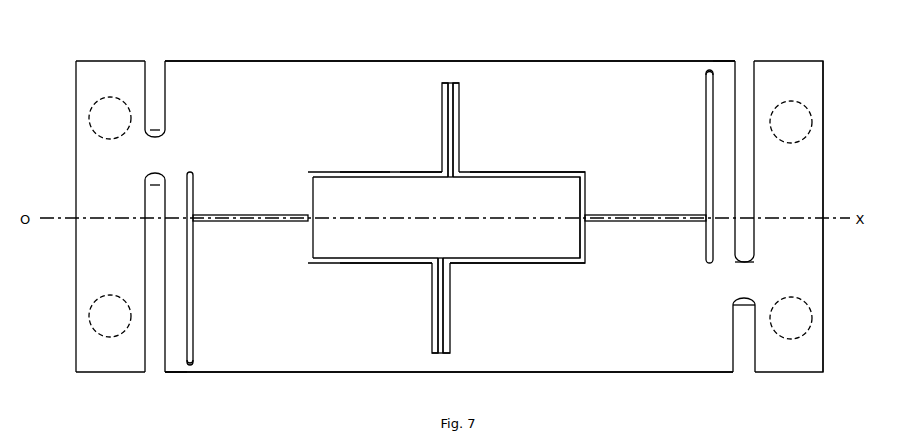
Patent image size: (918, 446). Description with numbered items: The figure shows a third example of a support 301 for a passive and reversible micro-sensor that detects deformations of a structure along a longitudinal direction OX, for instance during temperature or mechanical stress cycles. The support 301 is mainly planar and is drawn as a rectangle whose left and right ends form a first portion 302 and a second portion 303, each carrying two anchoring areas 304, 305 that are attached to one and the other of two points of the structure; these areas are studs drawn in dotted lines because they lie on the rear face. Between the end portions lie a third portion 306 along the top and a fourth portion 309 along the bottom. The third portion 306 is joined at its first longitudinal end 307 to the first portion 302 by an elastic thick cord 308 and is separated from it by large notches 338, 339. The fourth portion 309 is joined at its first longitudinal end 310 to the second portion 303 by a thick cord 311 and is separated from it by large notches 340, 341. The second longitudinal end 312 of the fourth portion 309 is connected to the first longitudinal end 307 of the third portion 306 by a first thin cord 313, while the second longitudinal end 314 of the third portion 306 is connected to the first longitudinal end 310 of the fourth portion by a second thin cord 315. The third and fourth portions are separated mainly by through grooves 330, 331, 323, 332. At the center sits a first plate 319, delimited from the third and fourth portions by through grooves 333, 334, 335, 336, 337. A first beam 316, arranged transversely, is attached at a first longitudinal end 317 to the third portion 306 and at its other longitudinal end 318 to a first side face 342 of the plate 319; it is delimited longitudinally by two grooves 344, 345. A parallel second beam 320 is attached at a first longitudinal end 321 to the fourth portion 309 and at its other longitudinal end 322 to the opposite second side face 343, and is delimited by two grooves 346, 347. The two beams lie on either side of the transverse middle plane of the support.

The support 301 is at (511, 55).
The first portion 302 is at (99, 172).
The second portion 303 is at (785, 163).
The anchoring areas 304 is at (90, 125).
The anchoring areas 305 is at (810, 111).
The third portion 306 is at (288, 95).
The first longitudinal end 307 is at (176, 121).
The thick cord 308 is at (179, 162).
The fourth portion 309 is at (570, 355).
The first longitudinal end 310 is at (733, 317).
The thick cord 311 is at (745, 275).
The second longitudinal end 312 is at (194, 362).
The first thin cord 313 is at (178, 372).
The second longitudinal end 314 is at (704, 87).
The second thin cord 315 is at (714, 63).
The first beam 316 is at (453, 158).
The first longitudinal end 317 is at (447, 83).
The other longitudinal end 318 is at (460, 175).
The first plate 319 is at (350, 177).
The second beam 320 is at (435, 291).
The first longitudinal end 321 is at (443, 356).
The other longitudinal end 322 is at (443, 264).
The through groove 323 is at (645, 202).
The through groove 330 is at (192, 258).
The through groove 331 is at (236, 215).
The through groove 332 is at (706, 144).
The through groove 333 is at (318, 195).
The through groove 334 is at (380, 176).
The through groove 335 is at (548, 176).
The through groove 336 is at (583, 197).
The through groove 337 is at (530, 264).
The large notch 338 is at (158, 73).
The large notch 339 is at (152, 340).
The large notch 340 is at (744, 92).
The large notch 341 is at (750, 348).
The first side face 342 is at (410, 176).
The second side face 343 is at (410, 263).
The groove 344 is at (429, 130).
The groove 345 is at (467, 130).
The groove 346 is at (430, 310).
The groove 347 is at (450, 291).